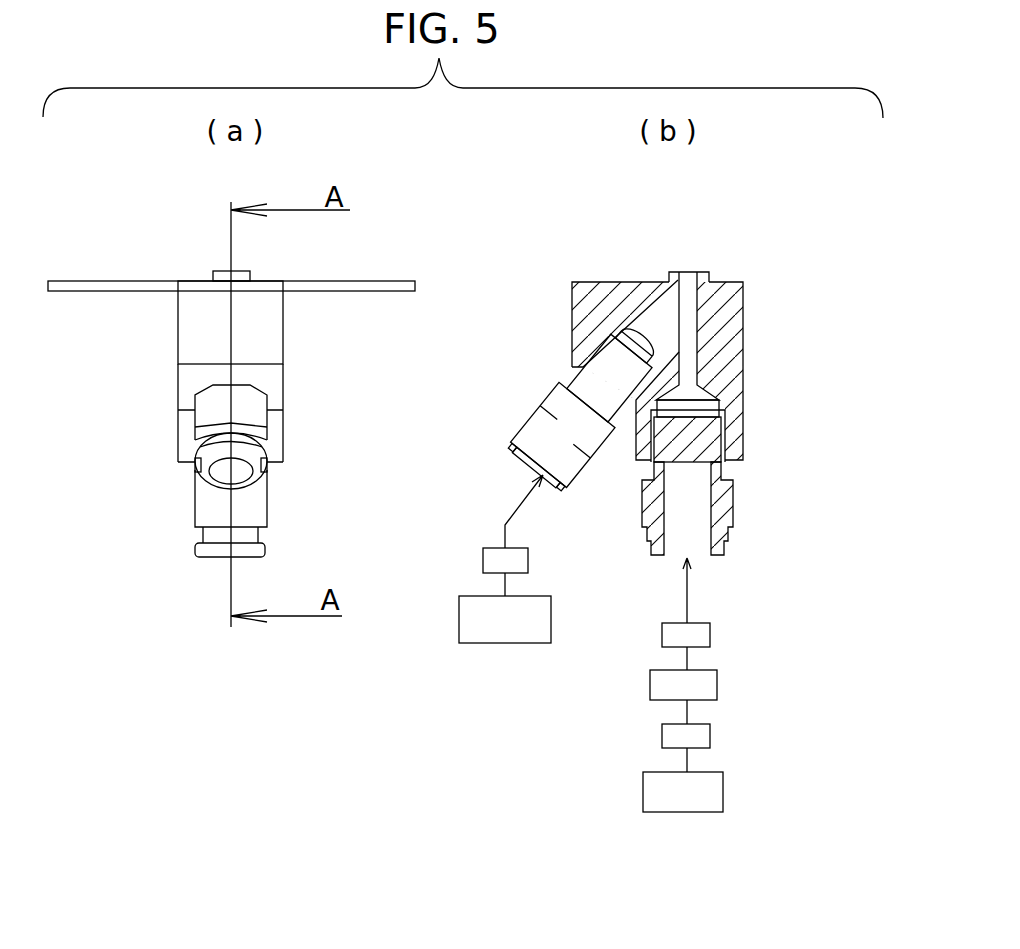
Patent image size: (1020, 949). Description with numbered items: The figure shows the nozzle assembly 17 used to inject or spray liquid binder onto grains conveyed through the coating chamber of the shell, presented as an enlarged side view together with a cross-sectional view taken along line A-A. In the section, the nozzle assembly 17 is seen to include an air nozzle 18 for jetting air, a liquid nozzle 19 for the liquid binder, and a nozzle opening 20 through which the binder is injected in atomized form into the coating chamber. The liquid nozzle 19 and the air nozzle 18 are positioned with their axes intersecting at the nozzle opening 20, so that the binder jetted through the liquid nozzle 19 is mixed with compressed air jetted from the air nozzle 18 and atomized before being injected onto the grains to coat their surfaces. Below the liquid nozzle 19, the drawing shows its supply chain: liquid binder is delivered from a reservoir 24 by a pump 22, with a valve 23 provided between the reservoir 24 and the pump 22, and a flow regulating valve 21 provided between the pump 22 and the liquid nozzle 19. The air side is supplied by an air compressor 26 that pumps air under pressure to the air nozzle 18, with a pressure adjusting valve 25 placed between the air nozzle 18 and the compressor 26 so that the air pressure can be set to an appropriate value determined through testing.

The nozzle assembly 17 is at (798, 381).
The air nozzle 18 is at (660, 312).
The liquid nozzle 19 is at (693, 338).
The nozzle opening 20 is at (686, 272).
The flow regulating valve 21 is at (710, 633).
The pump 22 is at (717, 685).
The valve 23 is at (710, 733).
The reservoir 24 is at (723, 793).
The pressure adjusting valve 25 is at (528, 560).
The air compressor 26 is at (551, 618).